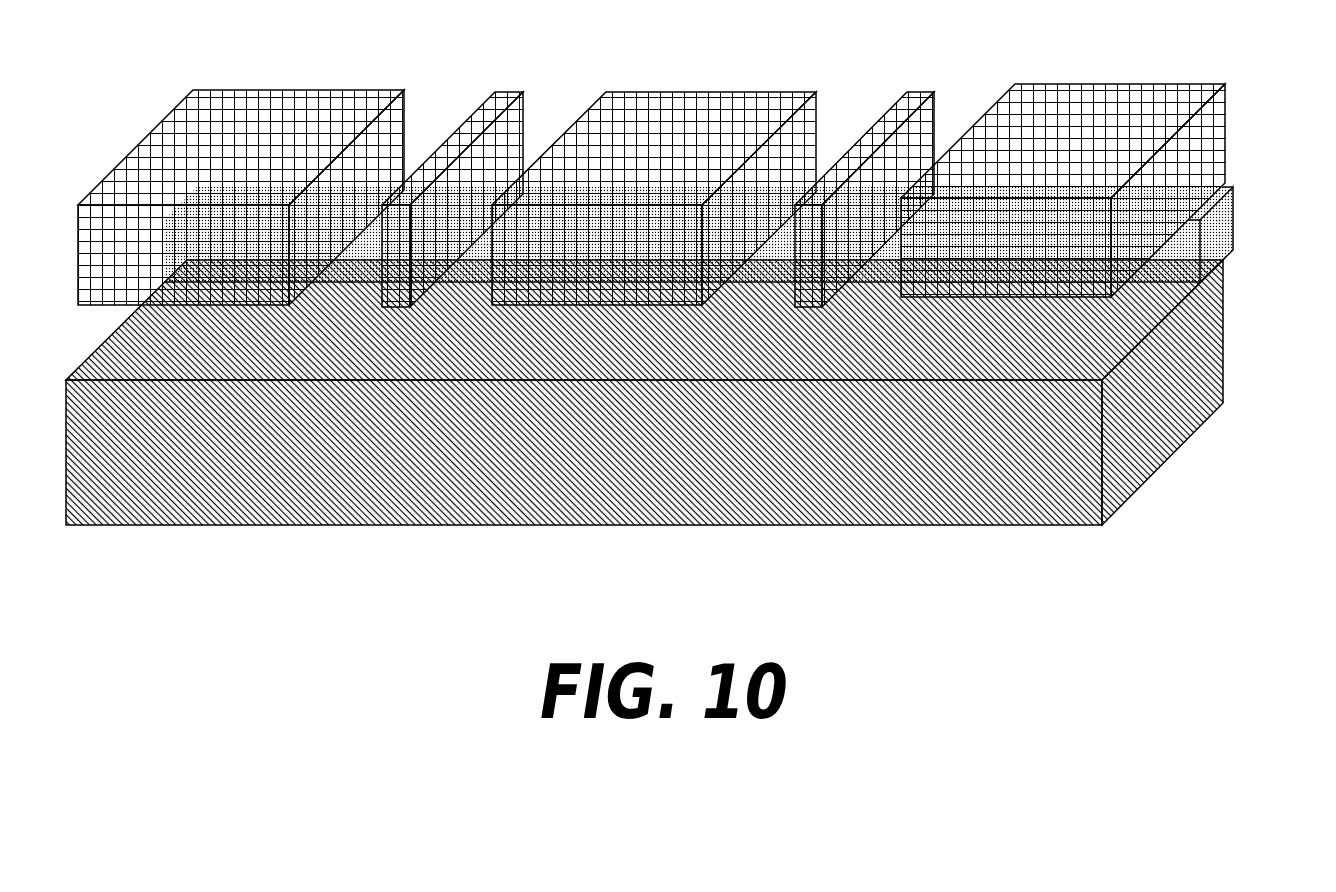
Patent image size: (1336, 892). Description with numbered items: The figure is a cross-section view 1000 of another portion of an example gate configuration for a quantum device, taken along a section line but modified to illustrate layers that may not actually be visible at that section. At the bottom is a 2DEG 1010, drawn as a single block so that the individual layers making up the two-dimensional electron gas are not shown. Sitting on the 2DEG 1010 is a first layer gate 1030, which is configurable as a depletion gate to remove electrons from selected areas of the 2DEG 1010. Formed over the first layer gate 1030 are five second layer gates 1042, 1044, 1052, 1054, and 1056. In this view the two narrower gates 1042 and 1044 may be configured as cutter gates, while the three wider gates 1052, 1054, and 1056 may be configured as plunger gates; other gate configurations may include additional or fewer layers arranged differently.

The cross-section view 1000 is at (701, 328).
The 2DEG 1010 is at (673, 462).
The first layer gate 1030 is at (1235, 220).
The second layer gate 1042 is at (505, 92).
The second layer gate 1044 is at (920, 92).
The second layer gate 1052 is at (198, 262).
The second layer gate 1054 is at (620, 263).
The second layer gate 1056 is at (1023, 262).